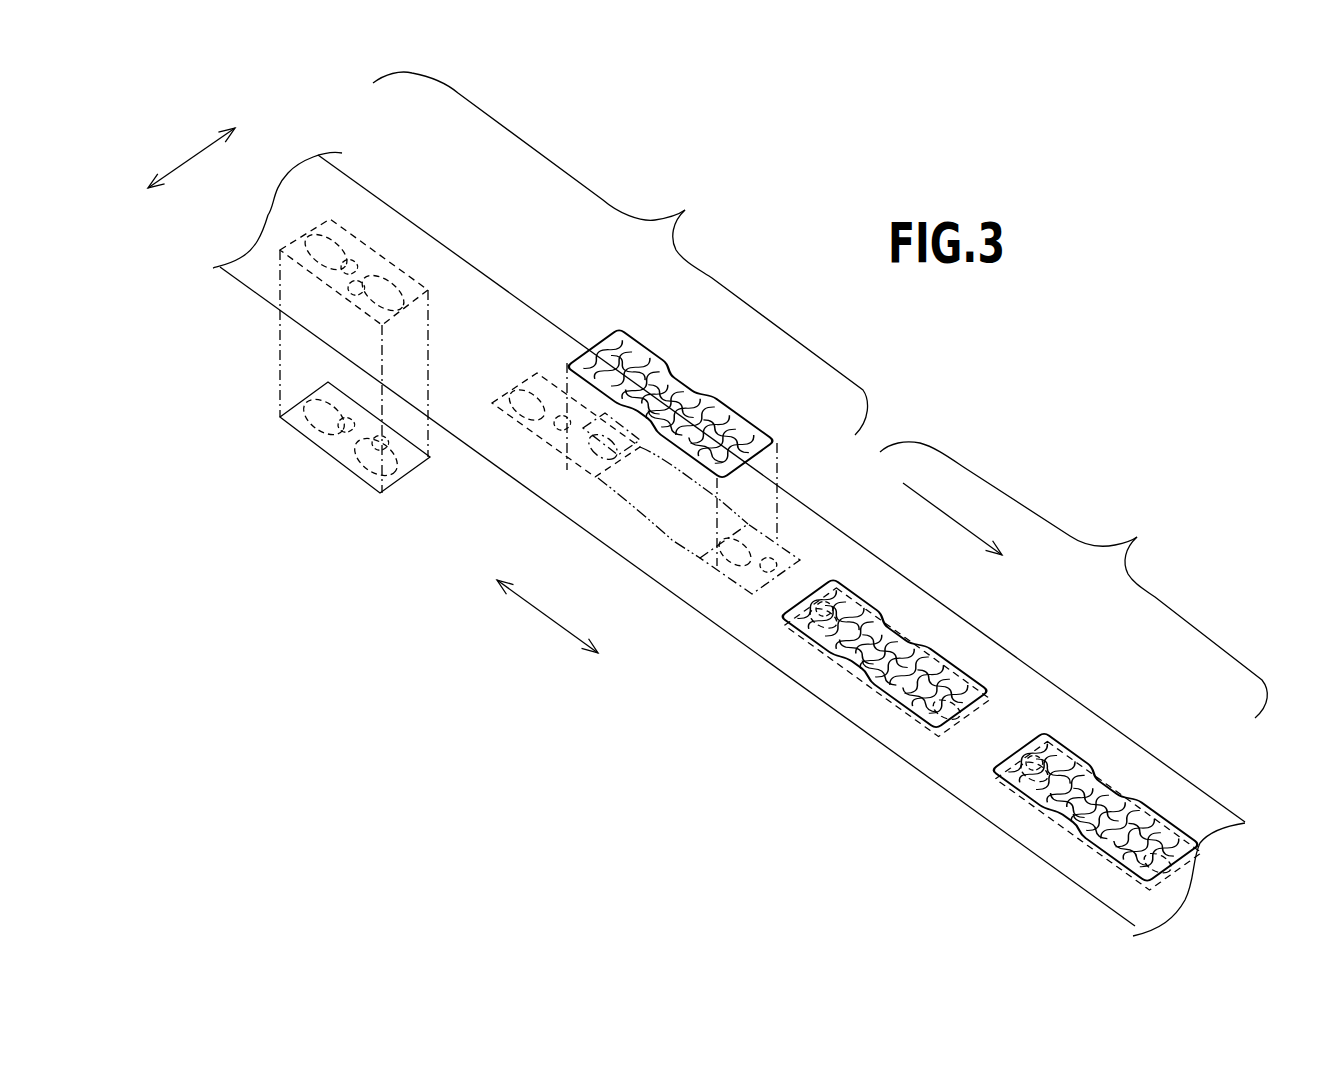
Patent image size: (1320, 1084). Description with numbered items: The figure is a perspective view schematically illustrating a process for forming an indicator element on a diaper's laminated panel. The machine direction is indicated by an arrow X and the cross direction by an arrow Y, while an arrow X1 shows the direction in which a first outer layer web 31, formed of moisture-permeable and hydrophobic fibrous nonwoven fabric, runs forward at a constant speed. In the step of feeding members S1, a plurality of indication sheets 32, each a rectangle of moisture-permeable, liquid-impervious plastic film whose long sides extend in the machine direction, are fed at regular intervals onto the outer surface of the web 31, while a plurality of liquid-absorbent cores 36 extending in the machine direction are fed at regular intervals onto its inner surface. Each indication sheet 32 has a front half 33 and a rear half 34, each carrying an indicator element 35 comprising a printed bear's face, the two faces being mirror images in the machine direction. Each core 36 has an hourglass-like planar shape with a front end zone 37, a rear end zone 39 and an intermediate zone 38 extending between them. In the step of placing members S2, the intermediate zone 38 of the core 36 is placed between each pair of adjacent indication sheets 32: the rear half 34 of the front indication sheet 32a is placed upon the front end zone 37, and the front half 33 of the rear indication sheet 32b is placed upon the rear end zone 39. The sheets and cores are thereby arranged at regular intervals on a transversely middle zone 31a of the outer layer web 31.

The first outer layer web 31 is at (443, 273).
The transversely middle zone 31a is at (653, 510).
The indication sheet 32 is at (330, 220).
The front indication sheet 32a is at (1027, 718).
The rear indication sheet 32b is at (797, 547).
The front half 33 is at (352, 467).
The rear half 34 is at (308, 433).
The indicator element 35 is at (300, 402).
The liquid-absorbent core 36 is at (765, 428).
The front end zone 37 is at (730, 425).
The intermediate zone 38 is at (680, 402).
The rear end zone 39 is at (612, 342).
The step of feeding members S1 is at (620, 253).
The step of placing members S2 is at (1073, 580).
The machine direction arrow X is at (538, 610).
The forward machine direction arrow X1 is at (947, 510).
The cross direction arrow Y is at (198, 150).